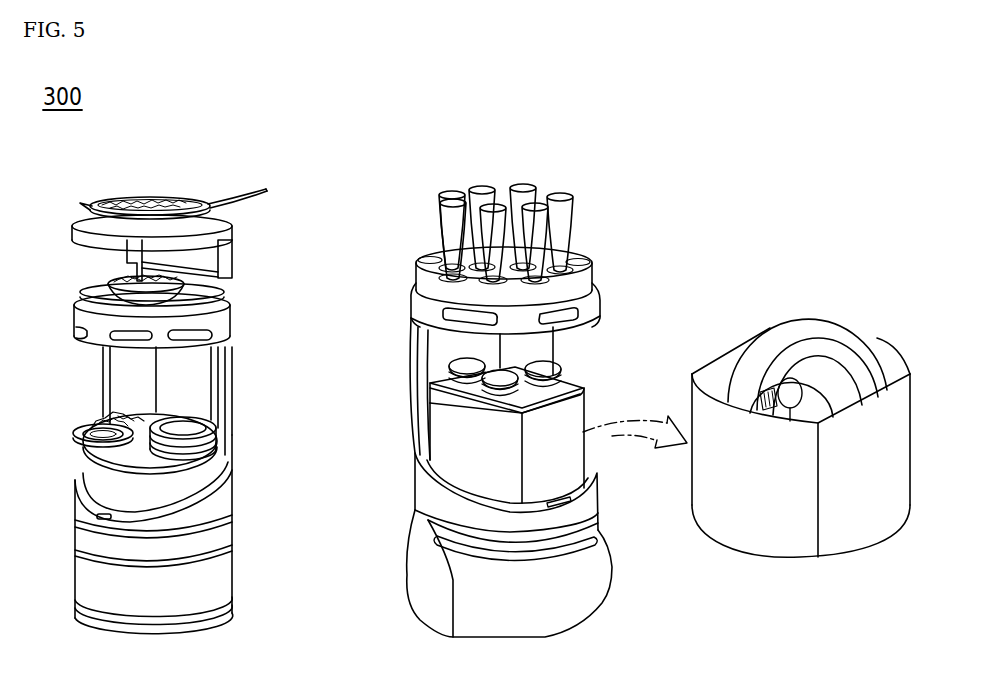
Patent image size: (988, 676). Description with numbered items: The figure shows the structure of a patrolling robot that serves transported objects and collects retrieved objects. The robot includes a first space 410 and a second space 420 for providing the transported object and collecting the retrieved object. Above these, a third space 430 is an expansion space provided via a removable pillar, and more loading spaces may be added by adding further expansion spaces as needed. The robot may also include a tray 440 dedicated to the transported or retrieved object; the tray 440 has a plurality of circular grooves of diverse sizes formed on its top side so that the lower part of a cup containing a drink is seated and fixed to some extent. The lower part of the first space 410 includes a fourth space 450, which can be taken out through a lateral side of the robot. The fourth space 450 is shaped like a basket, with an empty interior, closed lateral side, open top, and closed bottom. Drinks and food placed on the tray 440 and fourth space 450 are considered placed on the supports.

The first space 410 is at (212, 458).
The second space 420 is at (232, 322).
The third space 430 is at (233, 226).
The tray 440 is at (430, 282).
The fourth space 450 is at (452, 446).